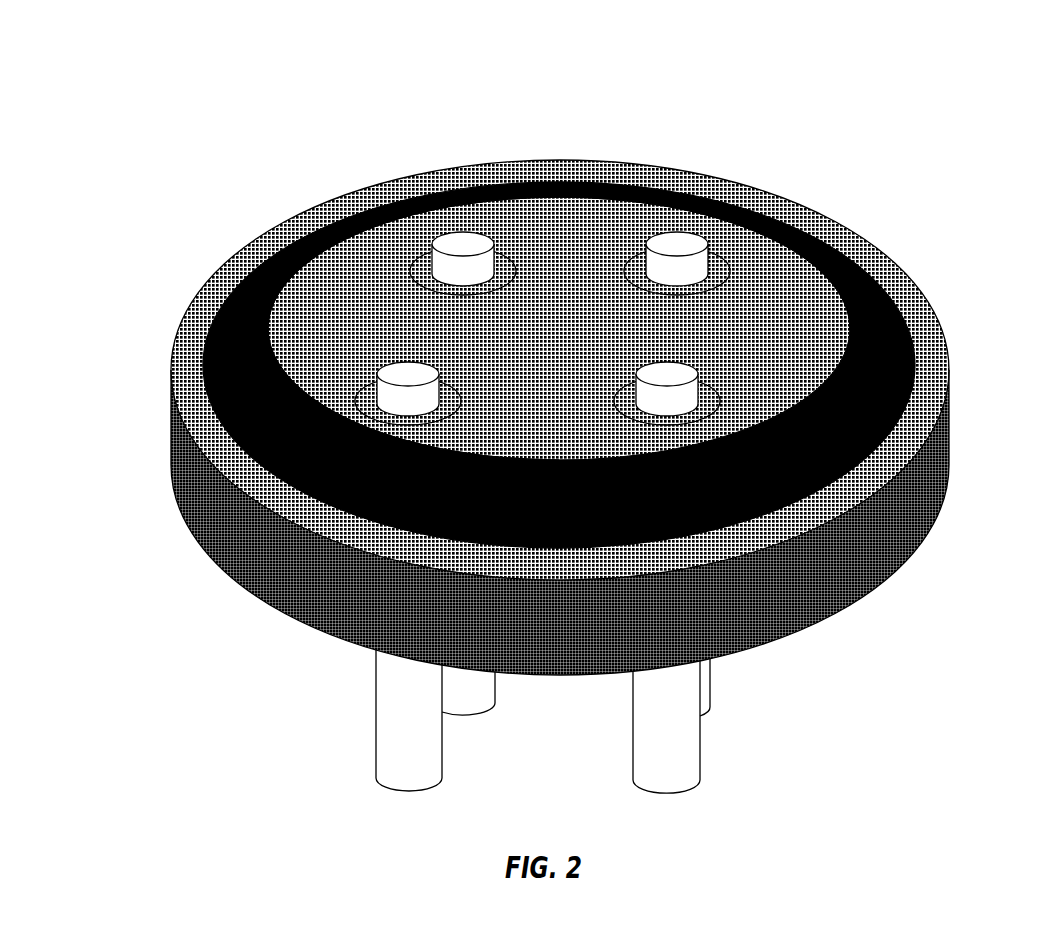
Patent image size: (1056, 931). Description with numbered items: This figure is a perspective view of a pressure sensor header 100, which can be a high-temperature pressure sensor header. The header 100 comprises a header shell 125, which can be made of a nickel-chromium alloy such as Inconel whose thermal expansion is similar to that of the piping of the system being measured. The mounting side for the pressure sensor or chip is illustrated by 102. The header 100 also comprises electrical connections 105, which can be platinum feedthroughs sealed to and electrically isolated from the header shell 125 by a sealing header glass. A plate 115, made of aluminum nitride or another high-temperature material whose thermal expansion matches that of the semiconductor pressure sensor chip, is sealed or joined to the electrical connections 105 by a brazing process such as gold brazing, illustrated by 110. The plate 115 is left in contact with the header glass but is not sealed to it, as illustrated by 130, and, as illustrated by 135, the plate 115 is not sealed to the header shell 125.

The pressure sensor header 100 is at (98, 104).
The mounting side 102 is at (603, 342).
The electrical connections 105 is at (668, 372).
The gold brazing 110 is at (723, 274).
The plate 115 is at (537, 243).
The header shell 125 is at (342, 588).
The unsealed contact between plate and header glass 130 is at (266, 383).
The unsealed interface between plate and header shell 135 is at (273, 412).